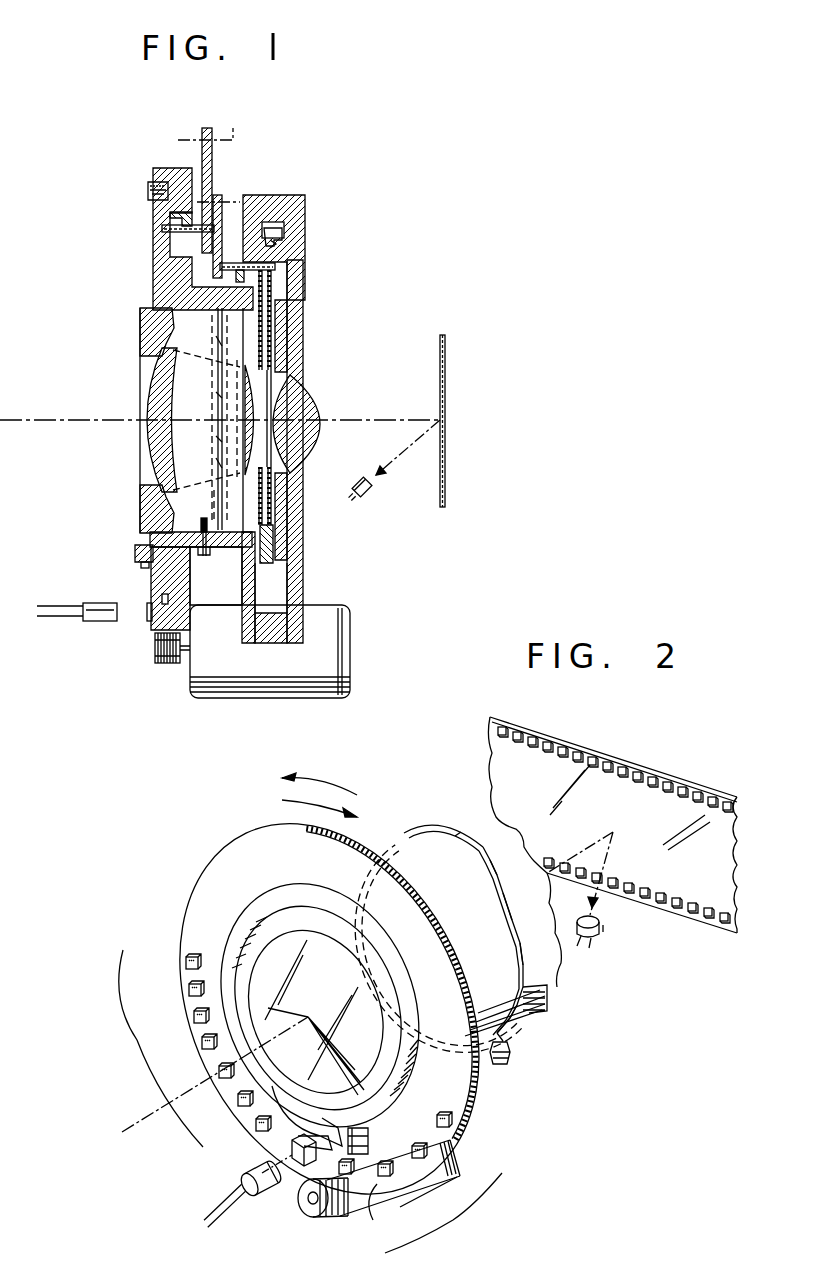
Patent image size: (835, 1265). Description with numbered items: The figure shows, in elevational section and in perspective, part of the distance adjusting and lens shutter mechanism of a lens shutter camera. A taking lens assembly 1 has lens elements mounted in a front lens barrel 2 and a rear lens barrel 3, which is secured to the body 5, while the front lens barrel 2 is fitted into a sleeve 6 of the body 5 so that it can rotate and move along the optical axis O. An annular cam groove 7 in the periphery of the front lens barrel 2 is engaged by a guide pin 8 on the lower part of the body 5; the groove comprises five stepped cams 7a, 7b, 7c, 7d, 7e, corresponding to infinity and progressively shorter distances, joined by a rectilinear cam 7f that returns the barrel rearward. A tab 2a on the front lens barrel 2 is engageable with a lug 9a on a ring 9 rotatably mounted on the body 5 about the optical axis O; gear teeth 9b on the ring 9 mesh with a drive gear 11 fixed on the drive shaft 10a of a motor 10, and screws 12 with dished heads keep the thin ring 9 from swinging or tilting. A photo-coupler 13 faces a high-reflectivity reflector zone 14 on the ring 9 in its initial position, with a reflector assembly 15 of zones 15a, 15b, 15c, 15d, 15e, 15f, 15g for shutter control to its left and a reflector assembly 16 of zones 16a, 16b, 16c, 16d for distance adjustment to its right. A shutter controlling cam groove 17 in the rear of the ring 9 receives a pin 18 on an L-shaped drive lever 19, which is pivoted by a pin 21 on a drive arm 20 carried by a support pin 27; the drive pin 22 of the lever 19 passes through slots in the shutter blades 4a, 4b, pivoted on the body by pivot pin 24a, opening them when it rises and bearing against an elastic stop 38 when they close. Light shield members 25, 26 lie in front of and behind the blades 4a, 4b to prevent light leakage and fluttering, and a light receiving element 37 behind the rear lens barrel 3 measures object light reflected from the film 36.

In FIG. 1, the optical axis O is at (56, 424).
In FIG. 2, the optical axis O is at (132, 1120).
In FIG. 1, the taking lens assembly 1 is at (150, 434).
In FIG. 2, the taking lens assembly 1 is at (320, 934).
In FIG. 1, the front lens barrel 2 is at (147, 332).
In FIG. 2, the front lens barrel 2 is at (284, 912).
In FIG. 1, the tab 2a is at (140, 534).
In FIG. 2, the tab 2a is at (338, 1148).
In FIG. 1, the rear lens barrel 3 is at (293, 300).
In FIG. 1, the shutter blade 4a is at (290, 374).
In FIG. 1, the shutter blade 4b is at (304, 390).
In FIG. 1, the body 5 is at (254, 194).
In FIG. 1, the sleeve 6 is at (170, 300).
In FIG. 1, the cam groove 7 is at (216, 374).
In FIG. 2, the cam groove 7 is at (494, 874).
In FIG. 1, the stepped cam 7a is at (204, 512).
In FIG. 2, the stepped cam 7a is at (497, 1036).
In FIG. 1, the stepped cam 7b is at (218, 490).
In FIG. 2, the stepped cam 7b is at (506, 1030).
In FIG. 1, the stepped cam 7c is at (218, 464).
In FIG. 2, the stepped cam 7c is at (518, 960).
In FIG. 1, the stepped cam 7d is at (218, 440).
In FIG. 2, the stepped cam 7d is at (508, 914).
In FIG. 1, the stepped cam 7e is at (218, 396).
In FIG. 2, the stepped cam 7e is at (491, 865).
In FIG. 1, the rectilinear cam 7f is at (216, 336).
In FIG. 2, the rectilinear cam 7f is at (455, 840).
In FIG. 1, the guide pin 8 is at (210, 550).
In FIG. 2, the guide pin 8 is at (500, 1058).
In FIG. 1, the ring 9 is at (154, 581).
In FIG. 2, the ring 9 is at (196, 892).
In FIG. 1, the lug 9a is at (136, 550).
In FIG. 2, the lug 9a is at (366, 1138).
In FIG. 2, the gear teeth 9b is at (435, 914).
In FIG. 1, the motor 10 is at (334, 634).
In FIG. 2, the motor 10 is at (350, 1214).
In FIG. 1, the drive shaft 10a is at (194, 664).
In FIG. 1, the drive gear 11 is at (156, 652).
In FIG. 2, the drive gear 11 is at (306, 1208).
In FIG. 1, the screw 12 is at (148, 184).
In FIG. 1, the photo-coupler 13 is at (98, 616).
In FIG. 2, the photo-coupler 13 is at (246, 1166).
In FIG. 1, the reflector zone 14 is at (146, 618).
In FIG. 2, the reflector zone 14 is at (298, 1136).
In FIG. 2, the reflector assembly 15 is at (138, 1042).
In FIG. 2, the reflector zone 15a is at (258, 1132).
In FIG. 2, the reflector zone 15b is at (238, 1107).
In FIG. 2, the reflector zone 15c is at (219, 1077).
In FIG. 2, the reflector zone 15d is at (202, 1046).
In FIG. 2, the reflector zone 15e is at (194, 1021).
In FIG. 2, the reflector zone 15f is at (189, 996).
In FIG. 2, the reflector zone 15g is at (186, 968).
In FIG. 2, the reflector assembly 16 is at (478, 1216).
In FIG. 2, the reflector zone 16a is at (356, 1186).
In FIG. 2, the reflector zone 16b is at (388, 1179).
In FIG. 2, the reflector zone 16c is at (422, 1160).
In FIG. 2, the reflector zone 16d is at (448, 1128).
In FIG. 1, the shutter controlling cam groove 17 is at (162, 236).
In FIG. 1, the pin 18 is at (180, 225).
In FIG. 1, the blade opening and closing drive lever 19 is at (218, 194).
In FIG. 1, the blade opening and closing drive arm 20 is at (202, 140).
In FIG. 1, the pin 21 is at (237, 202).
In FIG. 1, the drive pin 22 is at (273, 266).
In FIG. 1, the pivot pin 24a is at (269, 240).
In FIG. 1, the front light shield member 25 is at (272, 322).
In FIG. 1, the rear light shield member 26 is at (276, 344).
In FIG. 1, the support pin 27 is at (226, 130).
In FIG. 1, the film 36 is at (445, 420).
In FIG. 2, the film 36 is at (726, 884).
In FIG. 1, the light receiving element 37 is at (368, 484).
In FIG. 2, the light receiving element 37 is at (596, 934).
In FIG. 1, the stop 38 is at (251, 280).